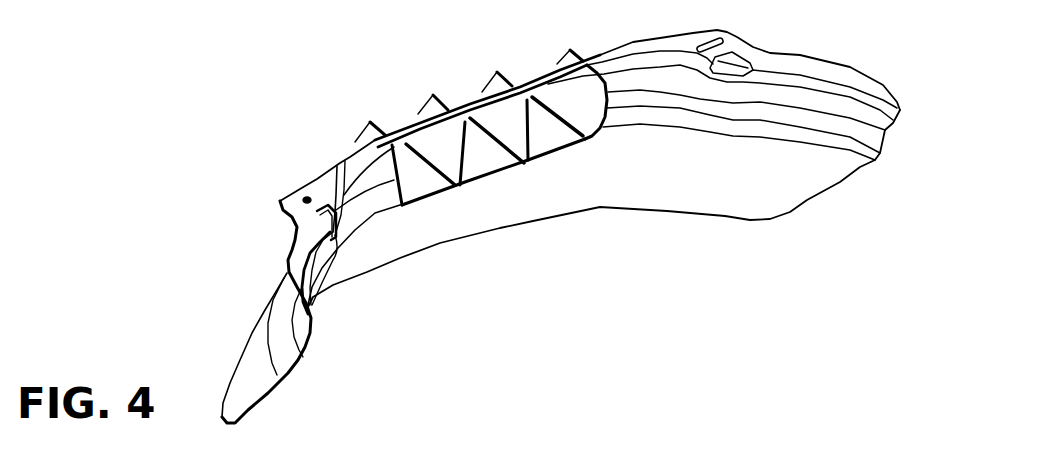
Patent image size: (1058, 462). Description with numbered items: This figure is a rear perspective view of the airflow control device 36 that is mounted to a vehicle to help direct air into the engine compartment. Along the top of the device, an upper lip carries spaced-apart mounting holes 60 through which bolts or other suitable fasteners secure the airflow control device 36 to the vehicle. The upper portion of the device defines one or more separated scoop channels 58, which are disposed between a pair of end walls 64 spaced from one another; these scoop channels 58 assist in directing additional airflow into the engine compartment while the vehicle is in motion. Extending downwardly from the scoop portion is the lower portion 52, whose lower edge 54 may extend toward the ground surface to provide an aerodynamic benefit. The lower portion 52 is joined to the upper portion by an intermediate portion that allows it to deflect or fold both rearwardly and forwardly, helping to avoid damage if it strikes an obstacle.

The airflow control device 36 is at (849, 65).
The lower portion 52 is at (781, 170).
The lower edge 54 is at (350, 280).
The scoop channels 58 is at (398, 118).
The mounting holes 60 is at (307, 197).
The end walls 64 is at (390, 183).